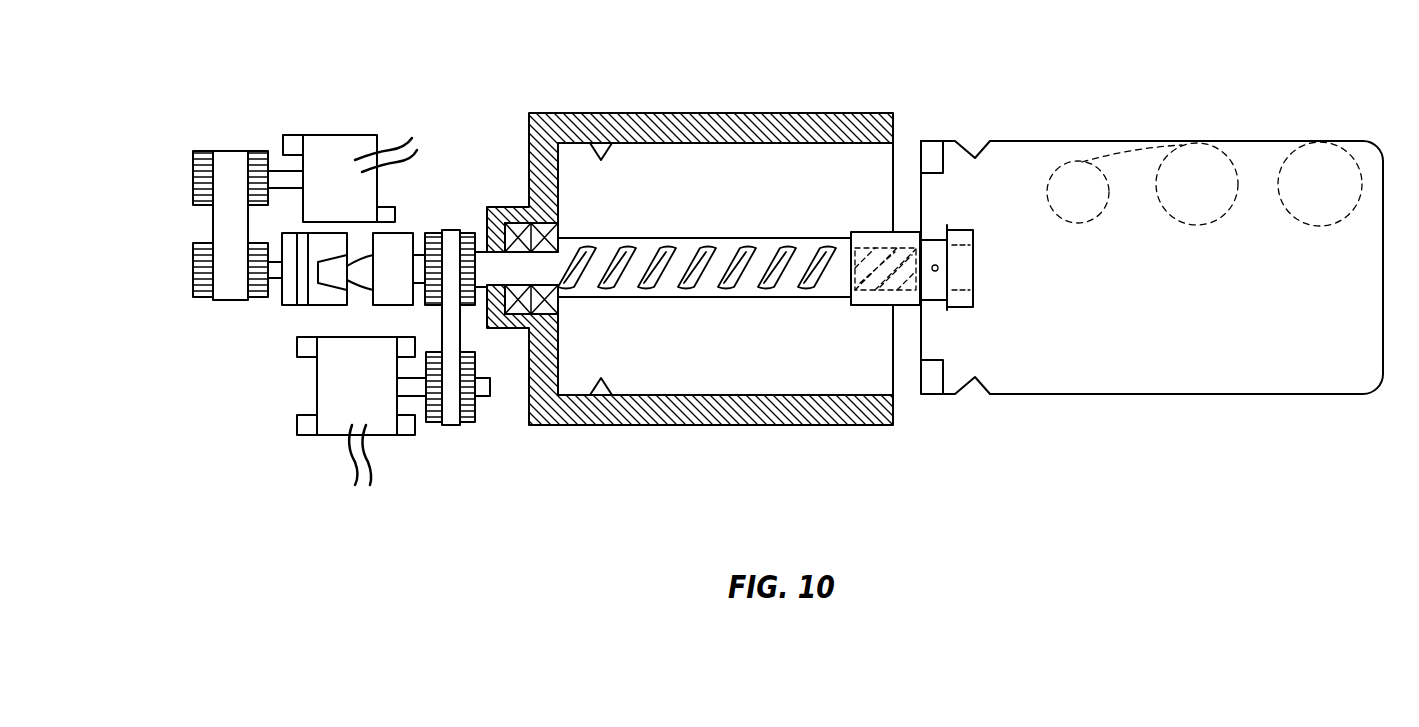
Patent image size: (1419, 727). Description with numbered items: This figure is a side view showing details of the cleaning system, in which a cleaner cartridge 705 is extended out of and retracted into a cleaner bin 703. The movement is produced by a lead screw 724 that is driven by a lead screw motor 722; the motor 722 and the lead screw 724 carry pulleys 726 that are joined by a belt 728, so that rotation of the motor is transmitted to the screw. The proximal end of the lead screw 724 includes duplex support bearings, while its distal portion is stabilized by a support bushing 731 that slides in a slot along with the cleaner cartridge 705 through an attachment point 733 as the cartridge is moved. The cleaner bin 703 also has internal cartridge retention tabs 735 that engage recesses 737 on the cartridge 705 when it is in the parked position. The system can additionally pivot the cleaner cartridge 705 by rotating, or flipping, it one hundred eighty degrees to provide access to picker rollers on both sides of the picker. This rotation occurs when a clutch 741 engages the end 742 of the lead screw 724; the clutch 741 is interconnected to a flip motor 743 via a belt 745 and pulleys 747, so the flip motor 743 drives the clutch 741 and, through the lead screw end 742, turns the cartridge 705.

The cleaner bin 703 is at (700, 428).
The cleaner cartridge 705 is at (1255, 370).
The lead screw motor 722 is at (330, 437).
The lead screw 724 is at (663, 250).
The pulleys 726 is at (467, 424).
The belt 728 is at (455, 228).
The support bushing 731 is at (885, 305).
The attachment point 733 is at (932, 300).
The cartridge retention tabs 735 is at (602, 143).
The recesses 737 is at (975, 152).
The clutch 741 is at (292, 308).
The end of the lead screw 742 is at (410, 230).
The flip motor 743 is at (348, 133).
The belt 745 is at (212, 220).
The pulleys 747 is at (195, 270).